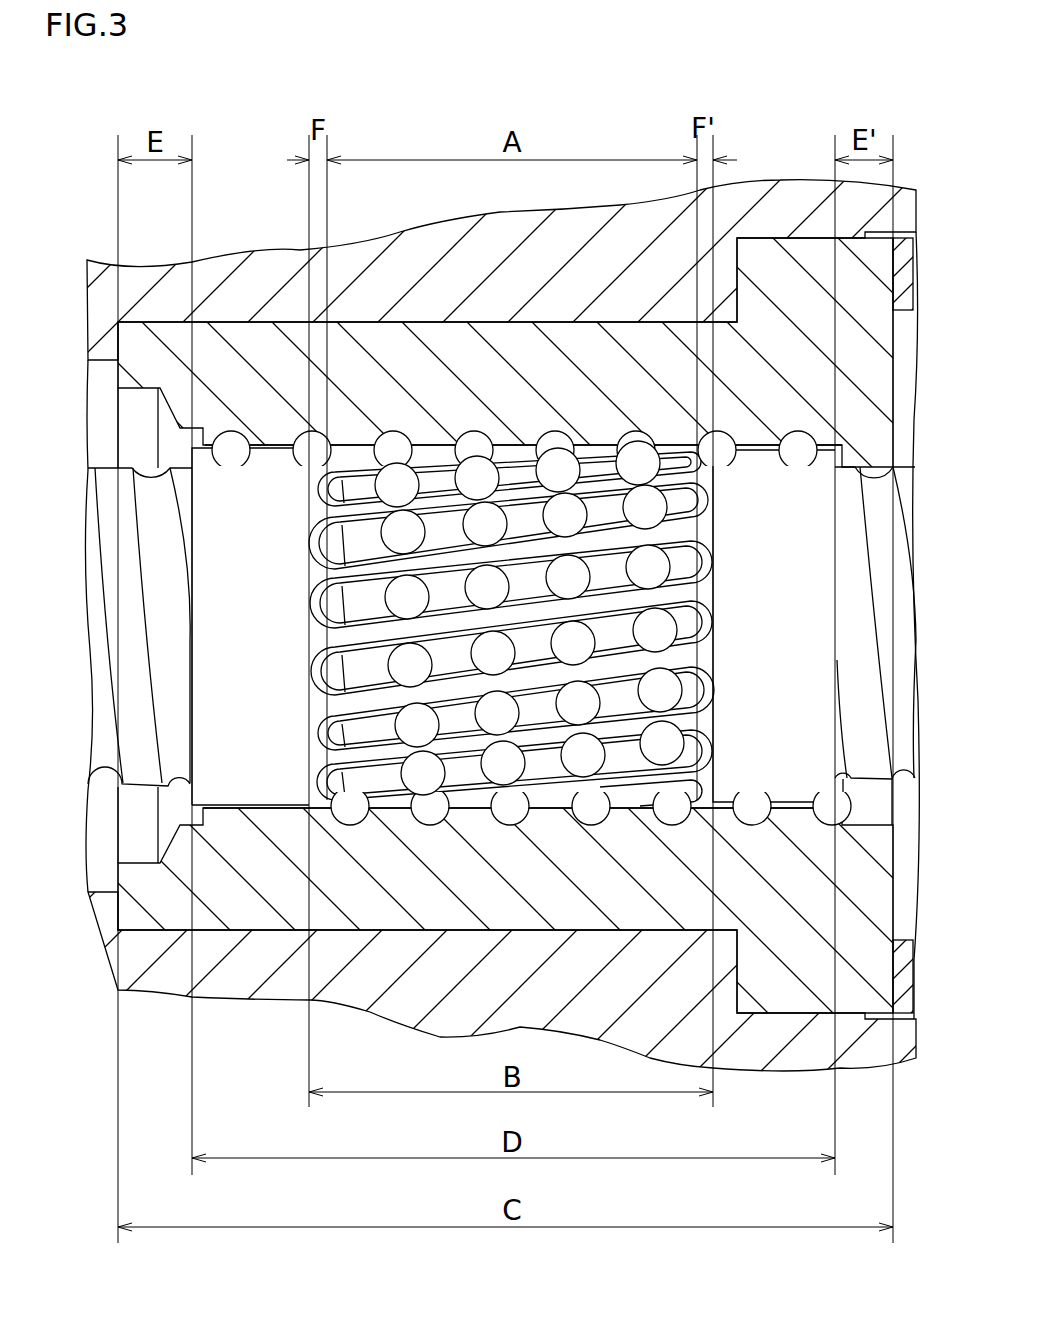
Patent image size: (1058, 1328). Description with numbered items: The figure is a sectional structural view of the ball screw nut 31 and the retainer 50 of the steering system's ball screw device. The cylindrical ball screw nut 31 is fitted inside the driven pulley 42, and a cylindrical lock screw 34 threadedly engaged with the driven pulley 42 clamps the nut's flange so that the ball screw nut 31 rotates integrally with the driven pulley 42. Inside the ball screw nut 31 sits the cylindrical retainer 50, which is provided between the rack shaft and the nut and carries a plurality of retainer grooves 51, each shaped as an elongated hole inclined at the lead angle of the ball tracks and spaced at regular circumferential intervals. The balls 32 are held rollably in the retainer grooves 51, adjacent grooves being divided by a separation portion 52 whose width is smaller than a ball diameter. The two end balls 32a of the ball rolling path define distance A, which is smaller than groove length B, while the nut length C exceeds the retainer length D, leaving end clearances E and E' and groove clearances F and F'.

The ball screw nut 31 is at (128, 352).
The balls 32 is at (475, 470).
The balls located at both ends of the ball rolling path 32a is at (322, 790).
The lock screw 34 is at (905, 262).
The driven pulley 42 is at (108, 290).
The retainer 50 is at (856, 536).
The retainer groove 51 is at (703, 548).
The separation portion 52 is at (698, 684).